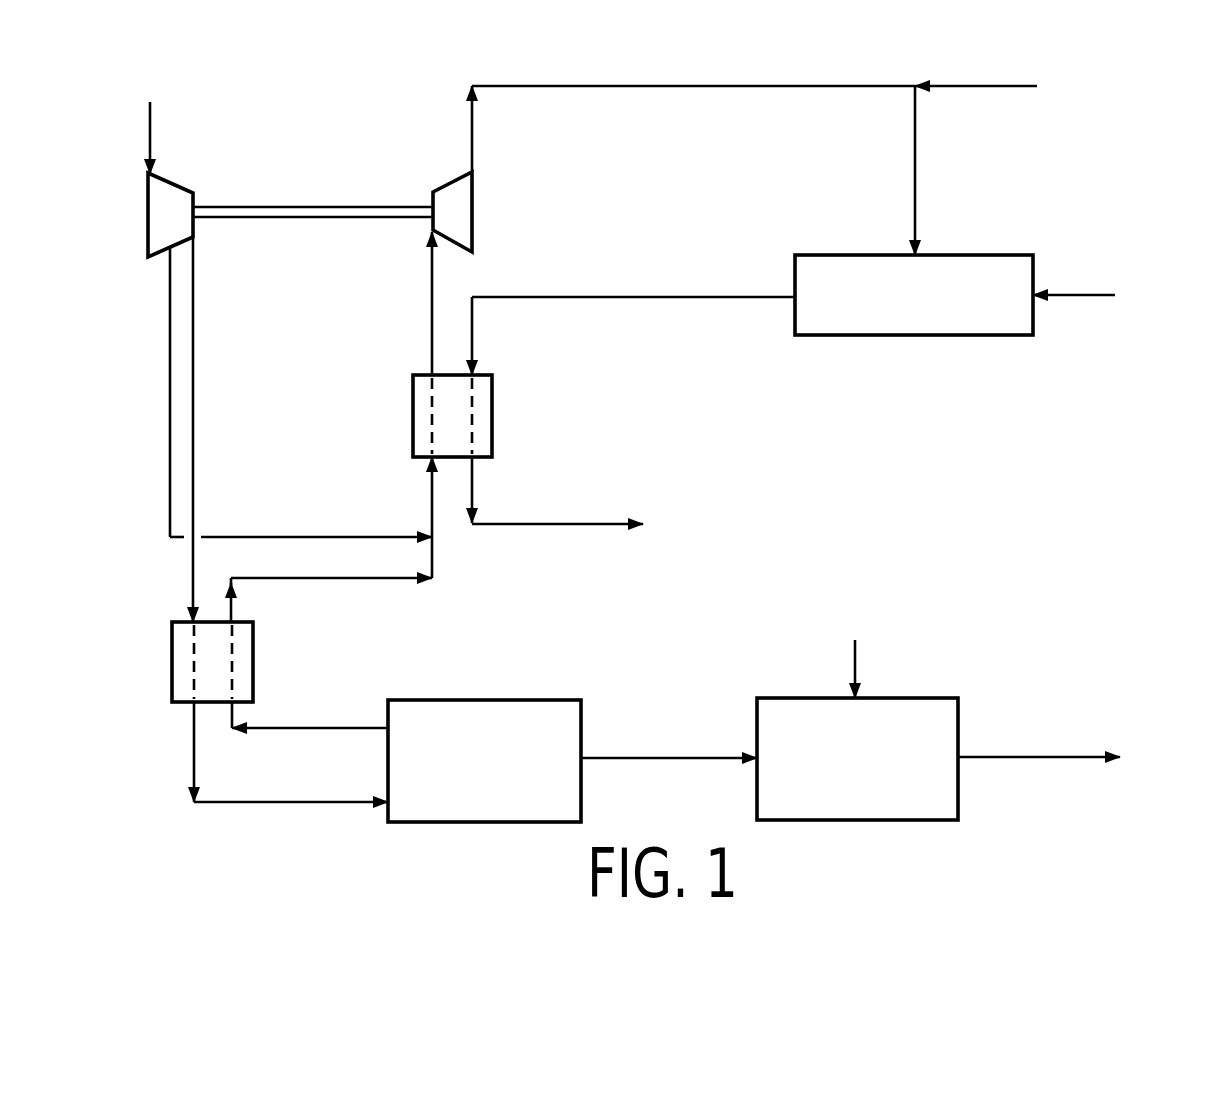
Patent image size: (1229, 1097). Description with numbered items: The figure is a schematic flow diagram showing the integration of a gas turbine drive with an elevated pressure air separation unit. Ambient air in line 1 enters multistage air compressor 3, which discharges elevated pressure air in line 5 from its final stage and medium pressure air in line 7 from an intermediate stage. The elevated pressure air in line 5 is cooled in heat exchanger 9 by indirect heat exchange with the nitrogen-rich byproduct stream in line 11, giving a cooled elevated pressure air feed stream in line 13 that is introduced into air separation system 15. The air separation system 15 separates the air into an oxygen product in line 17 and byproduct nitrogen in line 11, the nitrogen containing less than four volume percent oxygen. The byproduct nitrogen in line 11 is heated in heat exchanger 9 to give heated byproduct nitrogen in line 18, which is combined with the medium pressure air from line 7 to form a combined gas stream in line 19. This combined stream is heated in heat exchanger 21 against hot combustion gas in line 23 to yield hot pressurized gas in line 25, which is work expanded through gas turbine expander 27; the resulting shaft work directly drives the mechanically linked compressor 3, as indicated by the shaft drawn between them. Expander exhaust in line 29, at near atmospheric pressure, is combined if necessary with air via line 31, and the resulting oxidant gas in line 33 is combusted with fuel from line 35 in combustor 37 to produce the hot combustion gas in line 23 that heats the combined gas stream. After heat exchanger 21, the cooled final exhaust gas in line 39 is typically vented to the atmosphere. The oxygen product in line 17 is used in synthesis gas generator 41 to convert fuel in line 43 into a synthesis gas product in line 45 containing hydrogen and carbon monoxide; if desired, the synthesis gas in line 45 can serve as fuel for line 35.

The ambient air line 1 is at (149, 128).
The multistage air compressor 3 is at (148, 216).
The elevated pressure air line 5 is at (195, 322).
The medium pressure air line 7 is at (170, 322).
The heat exchanger 9 is at (172, 648).
The byproduct nitrogen line 11 is at (286, 730).
The cooled elevated pressure air feed stream line 13 is at (193, 760).
The air separation system 15 is at (538, 699).
The oxygen product line 17 is at (622, 760).
The heated byproduct nitrogen line 18 is at (362, 580).
The combined gas stream line 19 is at (430, 496).
The heat exchanger 21 is at (493, 422).
The hot combustion gas line 23 is at (676, 297).
The hot pressurized gas line 25 is at (431, 334).
The gas turbine expander 27 is at (472, 216).
The expander exhaust line 29 is at (666, 88).
The air line 31 is at (961, 88).
The oxidant gas line 33 is at (916, 200).
The fuel line 35 is at (1083, 294).
The combustor 37 is at (910, 337).
The cooled final exhaust gas line 39 is at (534, 523).
The synthesis gas generator 41 is at (792, 697).
The fuel line 43 is at (856, 663).
The synthesis gas line 45 is at (1057, 756).